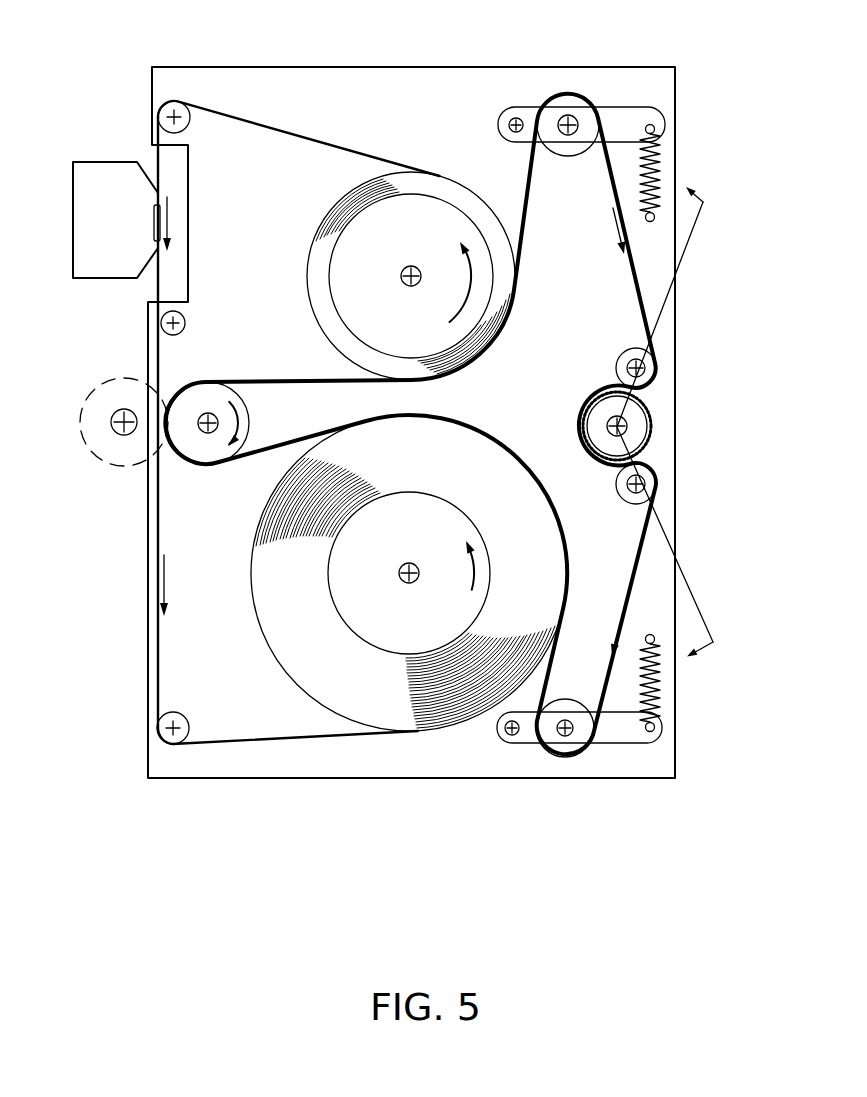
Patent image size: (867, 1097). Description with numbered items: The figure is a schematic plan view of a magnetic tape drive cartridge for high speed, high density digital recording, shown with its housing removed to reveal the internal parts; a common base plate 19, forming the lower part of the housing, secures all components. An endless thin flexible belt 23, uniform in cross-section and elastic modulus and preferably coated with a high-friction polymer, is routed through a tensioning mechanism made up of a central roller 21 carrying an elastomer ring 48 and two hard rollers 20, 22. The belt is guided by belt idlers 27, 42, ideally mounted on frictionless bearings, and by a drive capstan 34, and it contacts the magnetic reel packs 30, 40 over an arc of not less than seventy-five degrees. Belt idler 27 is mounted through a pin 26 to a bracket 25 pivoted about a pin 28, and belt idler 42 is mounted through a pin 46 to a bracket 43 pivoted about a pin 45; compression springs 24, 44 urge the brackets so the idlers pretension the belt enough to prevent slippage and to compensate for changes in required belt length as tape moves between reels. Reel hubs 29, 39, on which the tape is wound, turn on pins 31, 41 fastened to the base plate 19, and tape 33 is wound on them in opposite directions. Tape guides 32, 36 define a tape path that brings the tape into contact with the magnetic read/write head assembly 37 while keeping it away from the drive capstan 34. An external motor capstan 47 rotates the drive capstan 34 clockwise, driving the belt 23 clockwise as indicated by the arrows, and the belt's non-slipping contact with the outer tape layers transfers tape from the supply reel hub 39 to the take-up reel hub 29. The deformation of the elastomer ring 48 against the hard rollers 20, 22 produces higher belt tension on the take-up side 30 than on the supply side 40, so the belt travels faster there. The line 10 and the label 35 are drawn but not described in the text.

The section/viewing direction line 10 is at (665, 424).
The base plate 19 is at (600, 307).
The hard roller 20 is at (656, 367).
The central roller 21 is at (633, 436).
The hard roller 22 is at (656, 483).
The endless belt 23 is at (527, 214).
The compression spring 24 is at (658, 698).
The bracket 25 is at (630, 738).
The pin 26 is at (574, 735).
The belt idler 27 is at (568, 752).
The pin 28 is at (513, 737).
The reel hub 29 is at (448, 623).
The reel pack 30 is at (433, 710).
The pin 31 is at (408, 585).
The tape guide 32 is at (172, 744).
The tape 33 is at (310, 140).
The drive capstan 34 is at (205, 450).
The roller shaft 35 is at (203, 432).
The tape guide 36 is at (163, 330).
The magnetic read/write head assembly 37 is at (108, 227).
The reel hub 39 is at (398, 243).
The reel pack 40 is at (462, 202).
The pin 41 is at (412, 266).
The belt idler 42 is at (572, 100).
The bracket 43 is at (617, 112).
The compression spring 44 is at (657, 174).
The pin 45 is at (517, 118).
The pin 46 is at (572, 115).
The external motor capstan 47 is at (113, 432).
The elastomer ring 48 is at (655, 415).